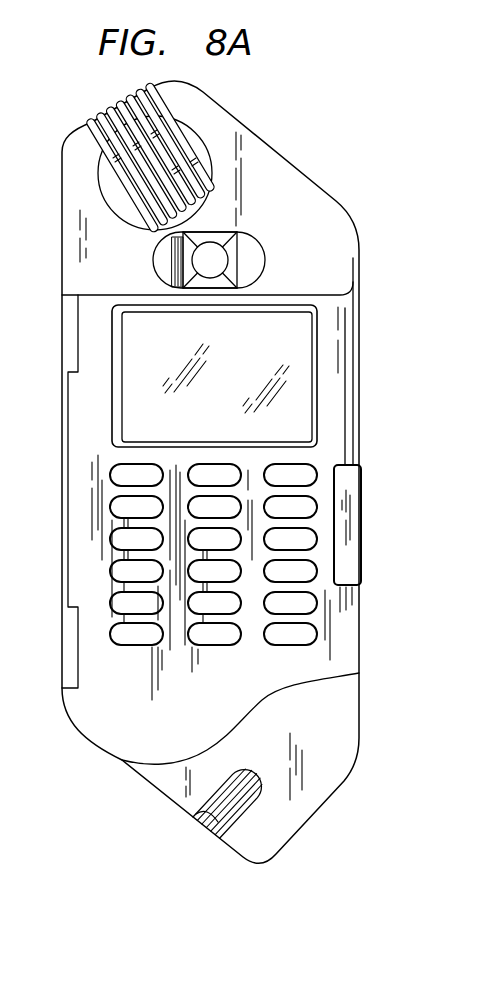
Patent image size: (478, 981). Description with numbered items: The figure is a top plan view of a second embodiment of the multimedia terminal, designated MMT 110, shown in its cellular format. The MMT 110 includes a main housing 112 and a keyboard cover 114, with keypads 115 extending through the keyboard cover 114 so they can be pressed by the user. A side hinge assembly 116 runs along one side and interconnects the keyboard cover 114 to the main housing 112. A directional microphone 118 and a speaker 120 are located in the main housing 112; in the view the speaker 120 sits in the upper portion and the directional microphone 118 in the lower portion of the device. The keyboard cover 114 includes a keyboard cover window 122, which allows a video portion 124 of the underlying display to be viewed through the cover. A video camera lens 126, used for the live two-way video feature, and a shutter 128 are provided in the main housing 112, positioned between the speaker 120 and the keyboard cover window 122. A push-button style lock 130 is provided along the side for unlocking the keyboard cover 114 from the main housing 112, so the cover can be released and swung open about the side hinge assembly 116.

The MMT 110 is at (360, 198).
The main housing 112 is at (359, 280).
The keyboard cover 114 is at (347, 377).
The keypads 115 is at (308, 602).
The side hinge assembly 116 is at (72, 343).
The directional microphone 118 is at (195, 817).
The speaker 120 is at (208, 142).
The keyboard cover window 122 is at (318, 420).
The video portion 124 is at (280, 352).
The video camera lens 126 is at (225, 256).
The shutter 128 is at (172, 262).
The push-button style lock 130 is at (357, 538).